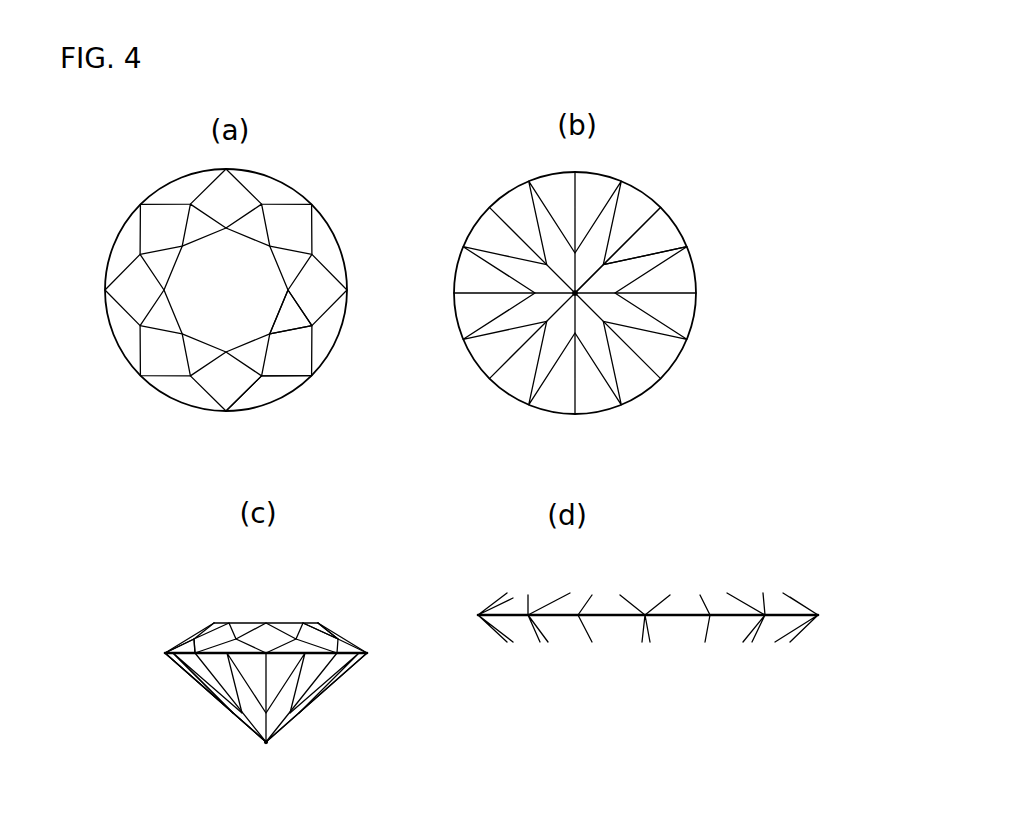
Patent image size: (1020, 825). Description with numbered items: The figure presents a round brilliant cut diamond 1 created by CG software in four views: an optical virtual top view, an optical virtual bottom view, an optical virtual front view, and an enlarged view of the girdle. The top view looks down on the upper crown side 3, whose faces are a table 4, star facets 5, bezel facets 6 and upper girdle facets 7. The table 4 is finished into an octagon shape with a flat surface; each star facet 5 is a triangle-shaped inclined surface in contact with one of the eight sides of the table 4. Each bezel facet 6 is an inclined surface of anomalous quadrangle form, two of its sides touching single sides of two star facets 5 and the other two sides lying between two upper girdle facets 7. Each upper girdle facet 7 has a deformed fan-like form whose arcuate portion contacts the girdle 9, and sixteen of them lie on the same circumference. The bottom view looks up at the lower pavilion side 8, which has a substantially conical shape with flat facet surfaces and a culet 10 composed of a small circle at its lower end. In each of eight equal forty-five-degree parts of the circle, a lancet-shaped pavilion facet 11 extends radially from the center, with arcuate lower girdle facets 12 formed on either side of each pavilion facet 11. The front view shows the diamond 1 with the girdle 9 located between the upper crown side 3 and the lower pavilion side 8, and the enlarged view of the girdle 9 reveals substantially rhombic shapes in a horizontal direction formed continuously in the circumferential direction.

The round brilliant cut diamond 1 is at (162, 185).
The upper crown side 3 is at (242, 250).
The table 4 is at (267, 277).
The star facet 5 is at (290, 323).
The bezel facet 6 is at (318, 295).
The upper girdle facet 7 is at (280, 390).
The lower pavilion side 8 is at (627, 387).
The girdle 9 is at (367, 653).
The culet 10 is at (577, 294).
The pavilion facet 11 is at (635, 272).
The lower girdle facet 12 is at (662, 233).